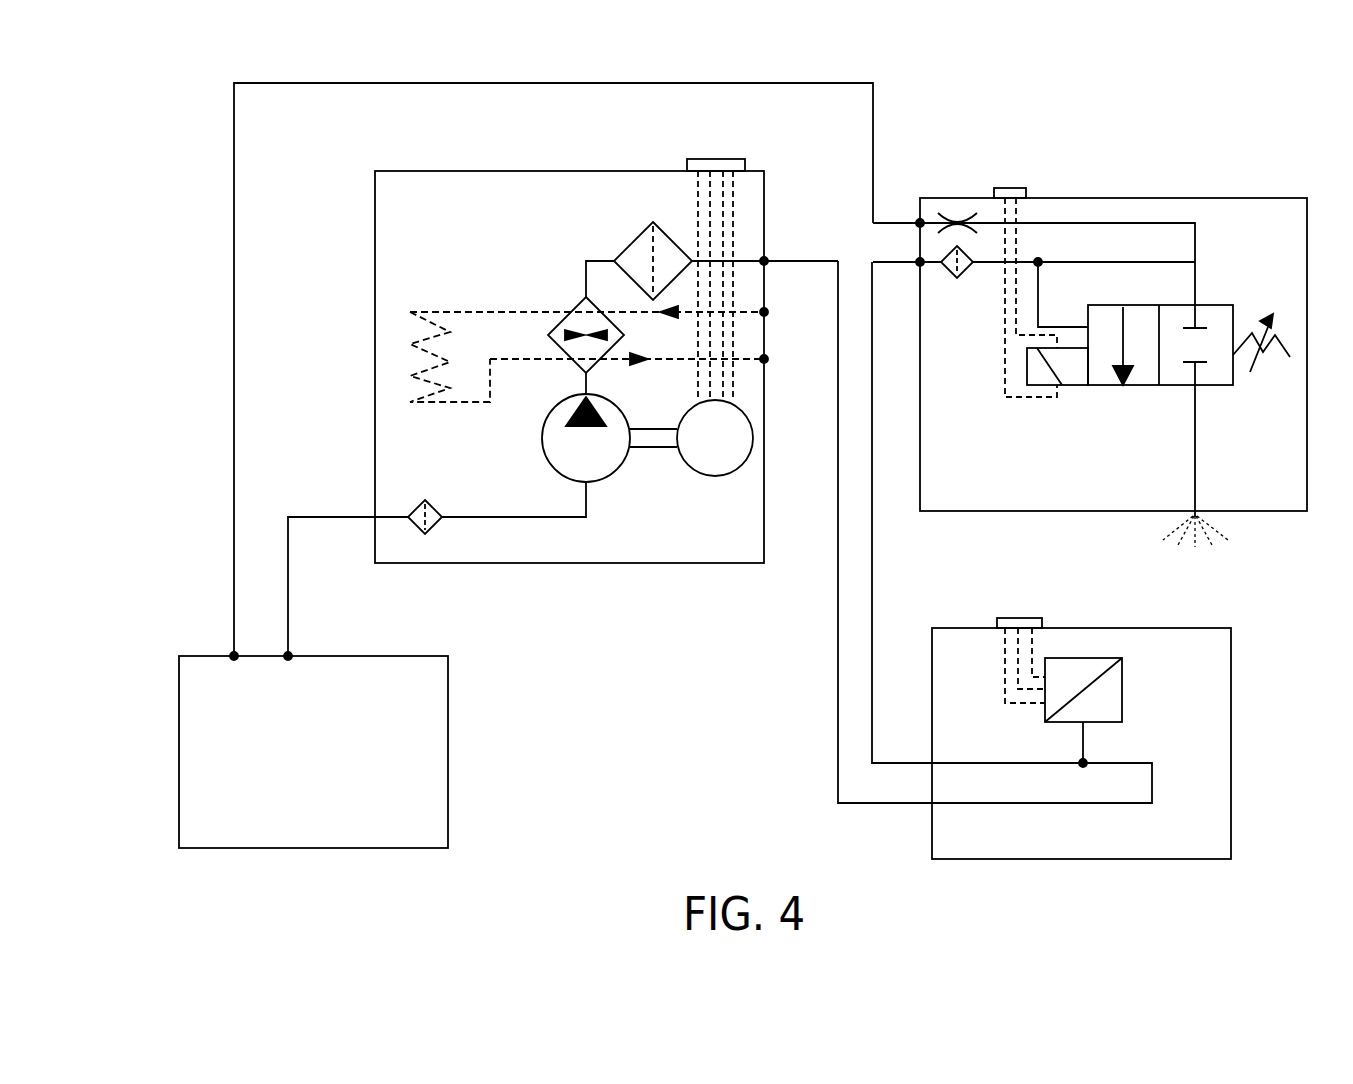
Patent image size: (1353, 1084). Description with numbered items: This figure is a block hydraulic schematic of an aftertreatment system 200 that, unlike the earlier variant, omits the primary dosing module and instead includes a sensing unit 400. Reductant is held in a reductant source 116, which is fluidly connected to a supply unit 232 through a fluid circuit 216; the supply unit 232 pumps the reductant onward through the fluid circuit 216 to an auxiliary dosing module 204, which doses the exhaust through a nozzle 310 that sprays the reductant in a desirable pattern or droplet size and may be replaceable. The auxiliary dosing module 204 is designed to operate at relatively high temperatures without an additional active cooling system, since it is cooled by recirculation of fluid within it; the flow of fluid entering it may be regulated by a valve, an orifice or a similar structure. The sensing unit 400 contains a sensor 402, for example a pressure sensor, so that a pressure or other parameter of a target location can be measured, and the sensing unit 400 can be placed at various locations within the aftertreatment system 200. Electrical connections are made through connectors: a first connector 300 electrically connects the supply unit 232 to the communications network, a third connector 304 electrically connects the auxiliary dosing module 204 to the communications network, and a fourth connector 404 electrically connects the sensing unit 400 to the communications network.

The aftertreatment system 200 is at (162, 118).
The reductant source 116 is at (448, 726).
The supply unit 232 is at (645, 565).
The first connector 300 is at (695, 160).
The third connector 304 is at (1021, 188).
The auxiliary dosing module 204 is at (1208, 197).
The nozzle 310 is at (1199, 513).
The fluid circuit 216 is at (798, 731).
The sensing unit 400 is at (1231, 667).
The sensor 402 is at (1122, 700).
The fourth connector 404 is at (1023, 617).